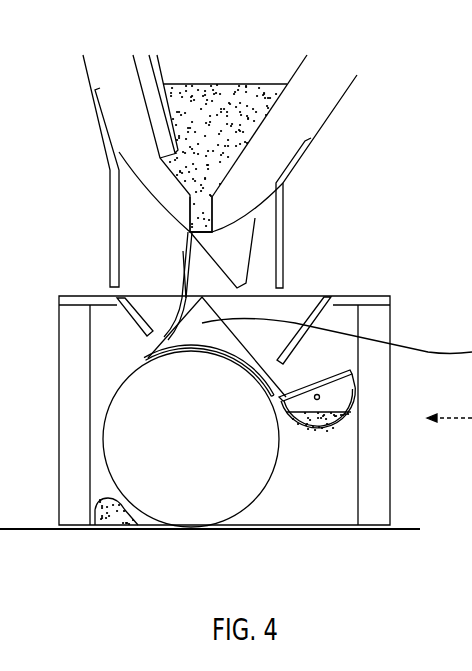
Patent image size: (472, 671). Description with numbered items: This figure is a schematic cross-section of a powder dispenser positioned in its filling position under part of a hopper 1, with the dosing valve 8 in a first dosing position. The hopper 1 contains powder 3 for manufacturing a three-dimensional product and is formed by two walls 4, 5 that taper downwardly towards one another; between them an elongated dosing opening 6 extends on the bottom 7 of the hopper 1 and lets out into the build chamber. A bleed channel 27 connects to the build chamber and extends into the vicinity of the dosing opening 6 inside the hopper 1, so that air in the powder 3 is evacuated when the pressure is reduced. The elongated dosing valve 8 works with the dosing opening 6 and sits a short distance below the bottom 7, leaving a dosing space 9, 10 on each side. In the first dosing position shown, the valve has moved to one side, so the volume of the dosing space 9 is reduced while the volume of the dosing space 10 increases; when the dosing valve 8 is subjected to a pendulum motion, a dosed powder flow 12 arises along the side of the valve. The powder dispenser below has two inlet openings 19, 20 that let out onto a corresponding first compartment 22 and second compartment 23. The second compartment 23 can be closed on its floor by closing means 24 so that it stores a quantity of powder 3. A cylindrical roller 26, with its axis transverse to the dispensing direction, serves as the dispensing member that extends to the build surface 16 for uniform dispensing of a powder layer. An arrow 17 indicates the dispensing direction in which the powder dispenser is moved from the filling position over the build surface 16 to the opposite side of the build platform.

The hopper 1 is at (352, 109).
The powder 3 is at (217, 130).
The wall 4 is at (120, 127).
The wall 5 is at (288, 137).
The dosing opening 6 is at (193, 215).
The bottom 7 is at (188, 224).
The dosing valve 8 is at (232, 250).
The dosing space 9 is at (183, 233).
The dosing space 10 is at (214, 231).
The dosed powder flow 12 is at (183, 251).
The build surface 16 is at (23, 531).
The arrow 17 is at (471, 500).
The inlet opening 19 is at (163, 307).
The inlet opening 20 is at (273, 307).
The first compartment 22 is at (100, 473).
The second compartment 23 is at (330, 390).
The closing means 24 is at (327, 433).
The cylindrical roller 26 is at (208, 495).
The bleed channel 27 is at (158, 108).